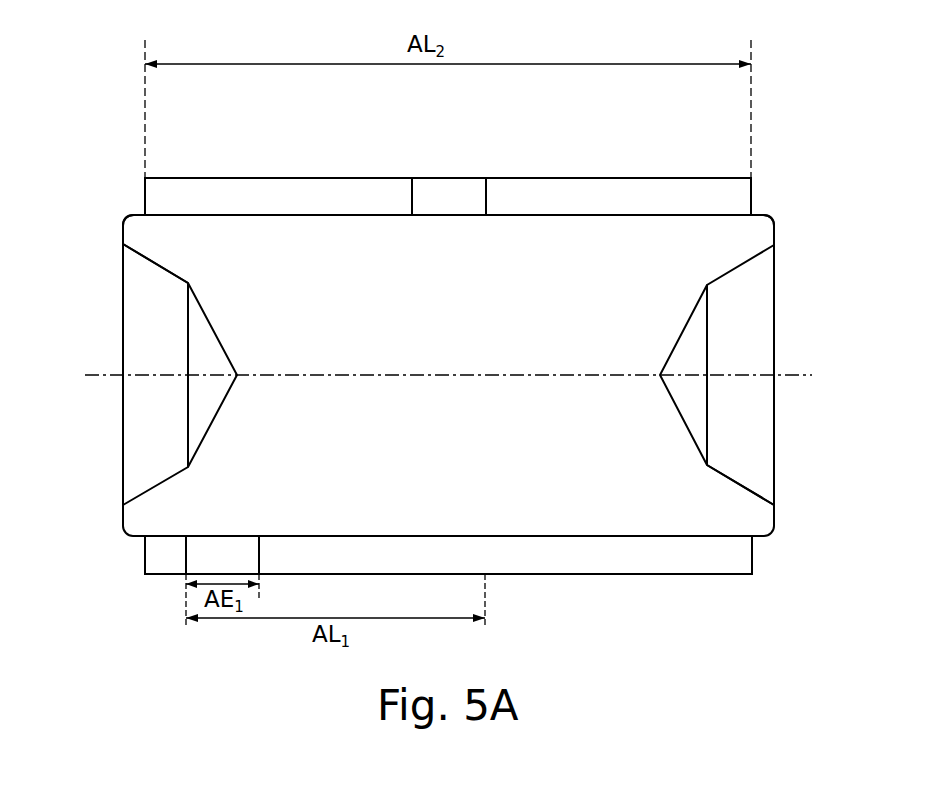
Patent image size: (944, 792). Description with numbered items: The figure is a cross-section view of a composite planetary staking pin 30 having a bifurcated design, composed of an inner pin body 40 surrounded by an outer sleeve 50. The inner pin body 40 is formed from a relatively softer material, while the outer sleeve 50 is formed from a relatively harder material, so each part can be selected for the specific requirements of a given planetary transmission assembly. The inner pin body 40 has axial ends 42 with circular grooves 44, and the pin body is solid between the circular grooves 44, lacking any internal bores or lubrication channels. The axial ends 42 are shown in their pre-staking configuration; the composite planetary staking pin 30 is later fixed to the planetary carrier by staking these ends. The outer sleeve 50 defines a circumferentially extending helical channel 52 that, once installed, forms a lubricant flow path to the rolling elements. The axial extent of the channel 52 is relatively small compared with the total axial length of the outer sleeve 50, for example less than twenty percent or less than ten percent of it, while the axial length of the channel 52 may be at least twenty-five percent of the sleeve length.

The composite planetary staking pin 30 is at (691, 172).
The inner pin body 40 is at (740, 520).
The axial ends 42 is at (141, 233).
The circular grooves 44 is at (163, 272).
The outer sleeve 50 is at (590, 198).
The helical channel 52 is at (458, 190).